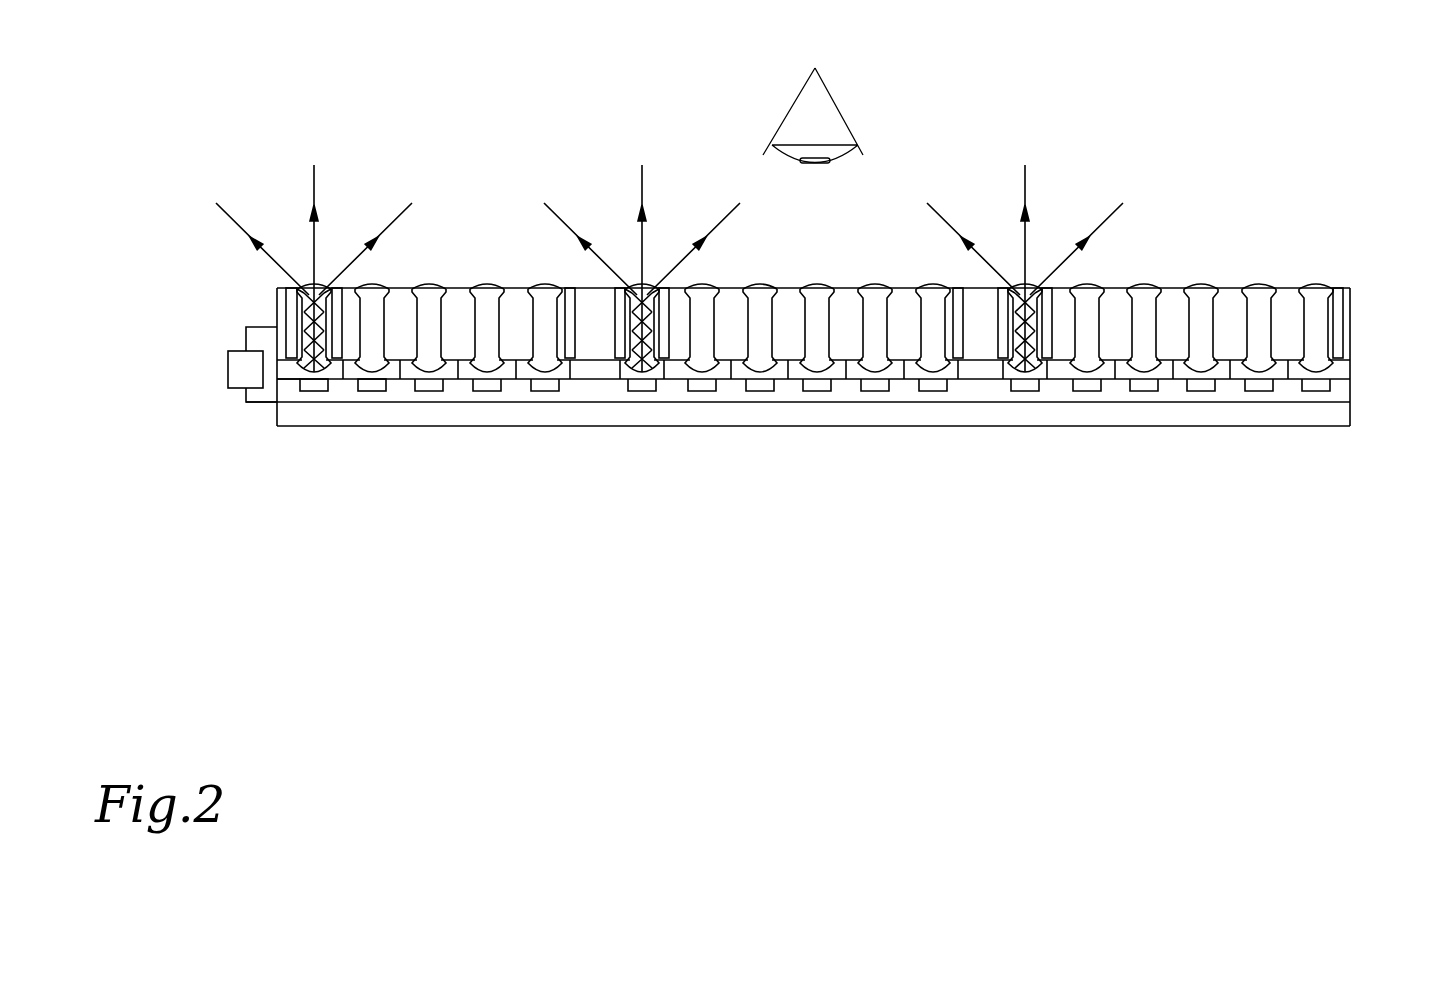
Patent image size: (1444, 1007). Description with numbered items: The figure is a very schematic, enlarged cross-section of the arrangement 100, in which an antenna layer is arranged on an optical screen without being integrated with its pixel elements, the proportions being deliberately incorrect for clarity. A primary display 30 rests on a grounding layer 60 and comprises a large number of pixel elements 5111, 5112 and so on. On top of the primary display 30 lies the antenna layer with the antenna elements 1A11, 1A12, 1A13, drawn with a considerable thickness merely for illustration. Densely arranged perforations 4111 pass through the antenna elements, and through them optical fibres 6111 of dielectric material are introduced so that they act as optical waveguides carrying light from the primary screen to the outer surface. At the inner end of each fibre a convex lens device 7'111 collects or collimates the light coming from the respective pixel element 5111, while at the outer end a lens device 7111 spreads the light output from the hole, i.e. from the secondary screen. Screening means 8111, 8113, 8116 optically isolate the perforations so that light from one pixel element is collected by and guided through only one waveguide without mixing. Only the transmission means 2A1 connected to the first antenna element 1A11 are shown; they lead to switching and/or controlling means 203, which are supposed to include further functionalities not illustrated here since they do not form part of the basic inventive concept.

The light emitting device 100 is at (874, 519).
The primary display 30 is at (1417, 386).
The grounding layer 60 is at (1404, 410).
The perforation 4111 is at (282, 294).
The transmission means 2A1 is at (246, 340).
The control unit 203 is at (218, 500).
The lens device 7111 is at (340, 288).
The optical fibre 6111 is at (442, 213).
The pixel element 5111 is at (302, 497).
The screening means 8111 is at (292, 575).
The convex lens device 7'111 is at (384, 442).
The pixel element 5112 is at (421, 508).
The screening means 8113 is at (433, 453).
The screening means 8116 is at (598, 452).
The first antenna element 1A11 is at (568, 298).
The antenna element 1A12 is at (958, 298).
The antenna element 1A13 is at (1364, 240).